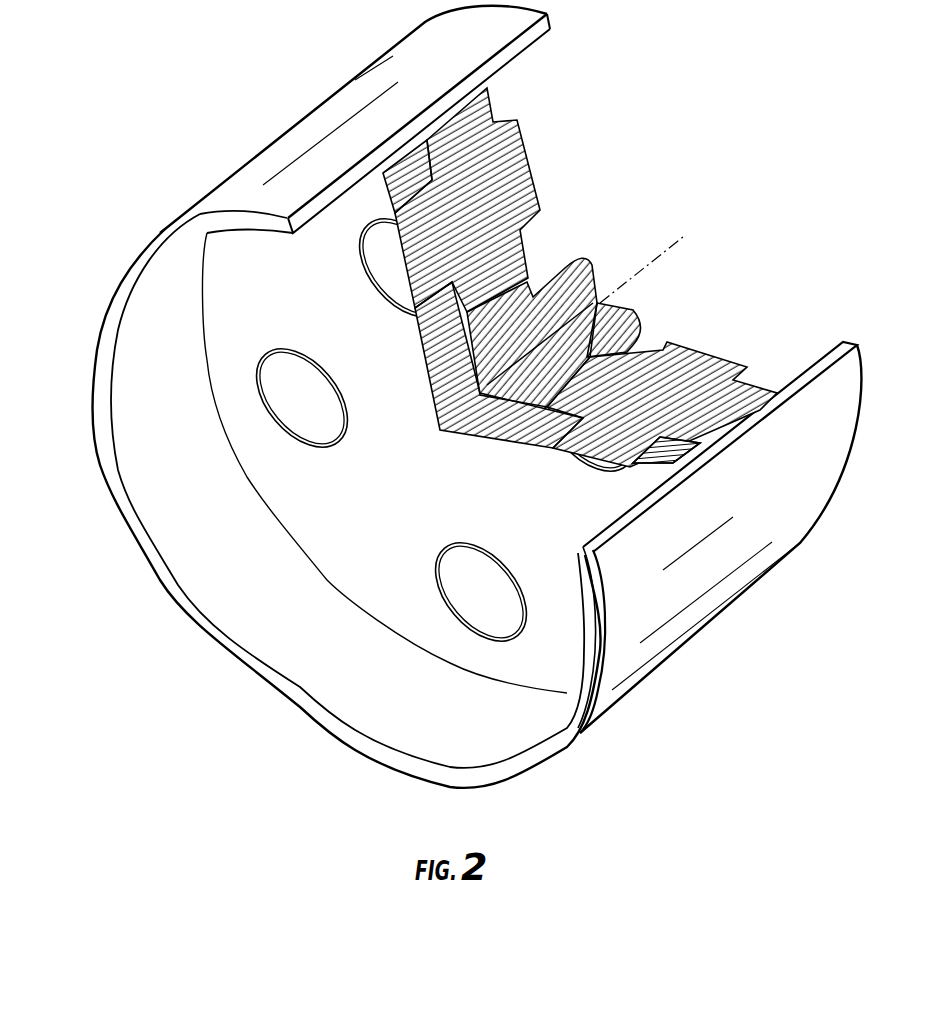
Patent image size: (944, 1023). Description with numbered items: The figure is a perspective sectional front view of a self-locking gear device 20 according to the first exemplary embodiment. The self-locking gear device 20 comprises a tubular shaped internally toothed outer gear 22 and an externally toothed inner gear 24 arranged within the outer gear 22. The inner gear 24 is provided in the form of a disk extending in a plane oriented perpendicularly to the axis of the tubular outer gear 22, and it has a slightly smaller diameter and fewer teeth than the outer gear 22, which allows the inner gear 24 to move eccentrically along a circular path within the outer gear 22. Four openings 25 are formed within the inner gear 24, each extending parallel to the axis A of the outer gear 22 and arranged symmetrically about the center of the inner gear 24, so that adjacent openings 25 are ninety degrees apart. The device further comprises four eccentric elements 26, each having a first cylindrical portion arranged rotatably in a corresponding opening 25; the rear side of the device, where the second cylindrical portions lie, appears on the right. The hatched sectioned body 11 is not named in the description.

The nozzle body 11 is at (601, 263).
The self-locking gear device 20 is at (452, 397).
The internally toothed outer gear 22 is at (388, 70).
The externally toothed inner gear 24 is at (242, 253).
The openings 25 is at (385, 305).
The eccentric elements 26 is at (307, 387).